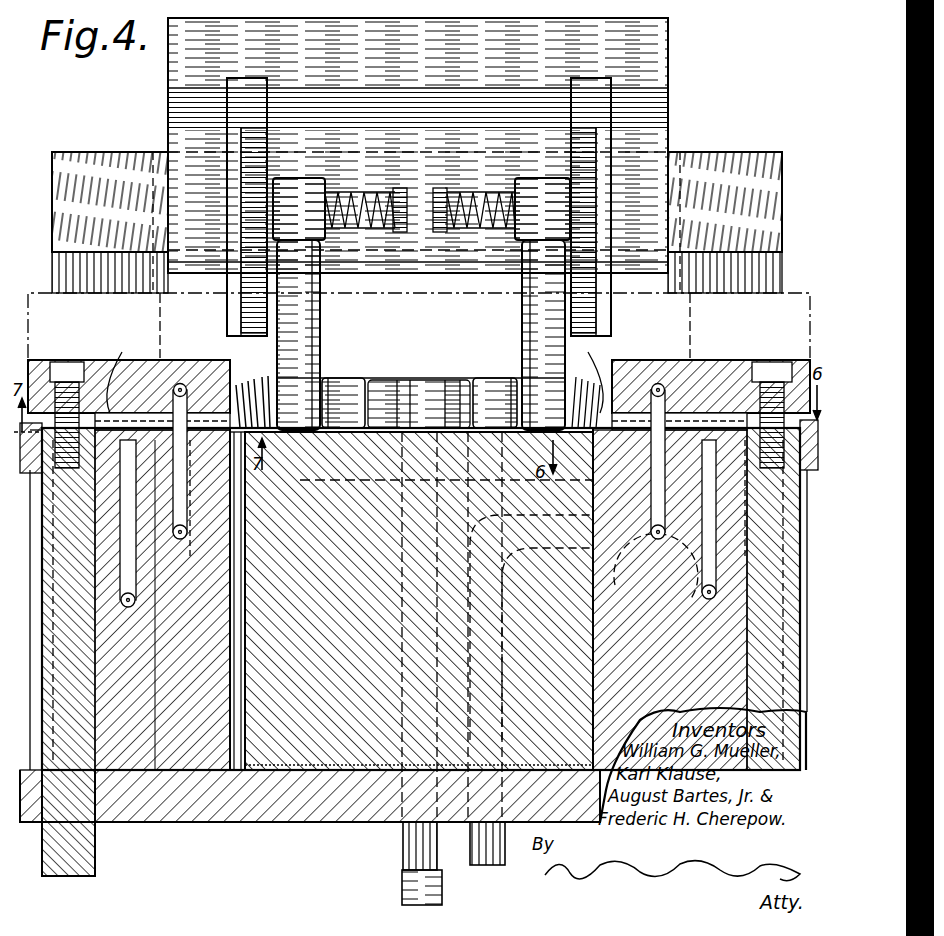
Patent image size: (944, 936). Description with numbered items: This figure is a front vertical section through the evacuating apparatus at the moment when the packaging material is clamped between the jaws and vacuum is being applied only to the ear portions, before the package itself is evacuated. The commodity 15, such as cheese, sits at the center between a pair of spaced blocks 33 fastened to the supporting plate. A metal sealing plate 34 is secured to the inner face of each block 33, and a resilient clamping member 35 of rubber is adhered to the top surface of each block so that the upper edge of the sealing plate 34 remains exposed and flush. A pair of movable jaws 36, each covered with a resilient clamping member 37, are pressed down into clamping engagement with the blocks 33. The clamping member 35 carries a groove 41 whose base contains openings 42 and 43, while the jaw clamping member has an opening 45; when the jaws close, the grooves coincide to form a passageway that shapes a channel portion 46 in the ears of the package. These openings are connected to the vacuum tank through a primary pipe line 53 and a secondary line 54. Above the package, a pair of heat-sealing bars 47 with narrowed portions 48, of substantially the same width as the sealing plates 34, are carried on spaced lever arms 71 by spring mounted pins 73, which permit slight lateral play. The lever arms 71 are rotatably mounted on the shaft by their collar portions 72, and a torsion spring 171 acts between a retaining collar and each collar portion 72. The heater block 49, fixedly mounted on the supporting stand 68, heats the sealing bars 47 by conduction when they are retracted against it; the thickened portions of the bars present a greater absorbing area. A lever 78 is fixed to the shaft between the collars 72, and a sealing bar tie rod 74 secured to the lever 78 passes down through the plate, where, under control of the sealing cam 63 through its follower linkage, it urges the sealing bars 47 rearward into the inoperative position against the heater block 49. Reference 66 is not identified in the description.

The commodity 15 is at (272, 720).
The block 33 is at (205, 682).
The sealing plate 34 is at (215, 593).
The clamping member 35 is at (188, 445).
The jaw 36 is at (134, 391).
The clamping member 37 is at (208, 432).
The groove 41 is at (355, 374).
The opening 42 is at (150, 450).
The opening 43 is at (366, 599).
The opening 45 is at (165, 412).
The channel portion 46 is at (148, 440).
The heat-sealing bar 47 is at (419, 207).
The narrowed portion 48 is at (237, 340).
The heater block 49 is at (430, 65).
The primary pipe line 53 is at (470, 840).
The secondary line 54 is at (650, 570).
The sealing cam 63 is at (402, 882).
The leg 66 is at (770, 619).
The supporting stand 68 is at (735, 160).
The lever arm 71 is at (305, 316).
The collar portion 72 is at (343, 388).
The spring mounted pin 73 is at (345, 198).
The sealing bar tie rod 74 is at (415, 838).
The lever 78 is at (403, 385).
The torsion spring 171 is at (250, 385).